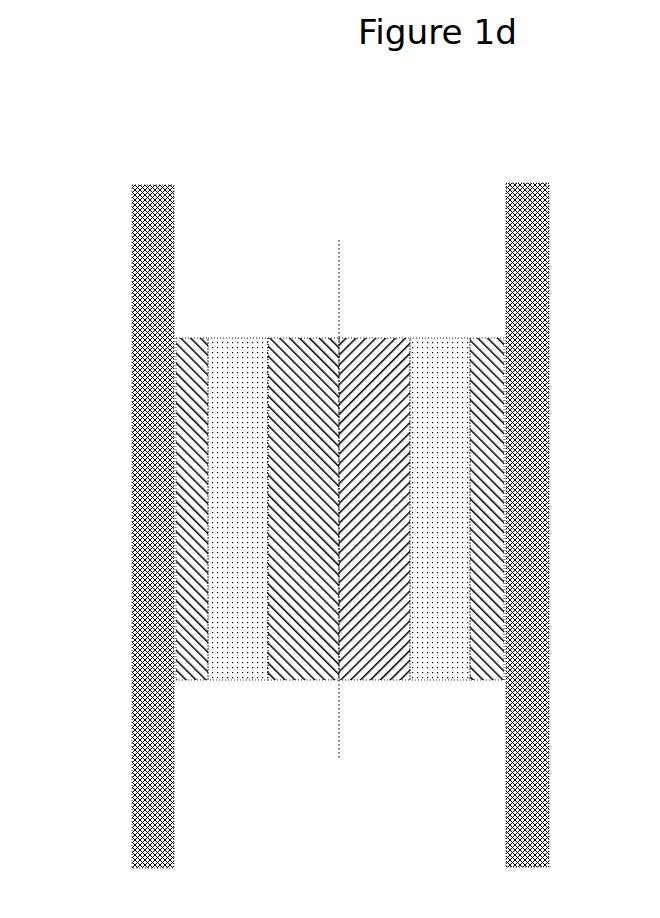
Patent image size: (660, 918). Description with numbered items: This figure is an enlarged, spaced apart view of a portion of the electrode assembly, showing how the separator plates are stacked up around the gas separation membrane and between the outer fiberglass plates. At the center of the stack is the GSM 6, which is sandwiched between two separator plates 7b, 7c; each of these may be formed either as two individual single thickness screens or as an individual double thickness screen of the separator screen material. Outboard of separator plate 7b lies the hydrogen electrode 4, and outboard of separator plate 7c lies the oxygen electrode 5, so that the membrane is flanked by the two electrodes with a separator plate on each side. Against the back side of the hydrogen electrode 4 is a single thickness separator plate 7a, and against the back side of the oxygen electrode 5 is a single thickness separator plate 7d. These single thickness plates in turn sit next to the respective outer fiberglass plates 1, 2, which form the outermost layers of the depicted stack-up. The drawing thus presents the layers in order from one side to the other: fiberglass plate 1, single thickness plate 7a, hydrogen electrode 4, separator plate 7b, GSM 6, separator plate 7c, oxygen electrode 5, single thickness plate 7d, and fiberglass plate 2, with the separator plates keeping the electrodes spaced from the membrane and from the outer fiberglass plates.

The outer fiberglass plate 1 is at (131, 241).
The outer fiberglass plate 2 is at (547, 219).
The hydrogen electrode 4 is at (243, 683).
The oxygen electrode 5 is at (445, 680).
The GSM 6 is at (339, 240).
The single thickness plate 7a is at (190, 338).
The separator plate 7b is at (303, 338).
The separator plate 7c is at (387, 338).
The single thickness plate 7d is at (490, 338).